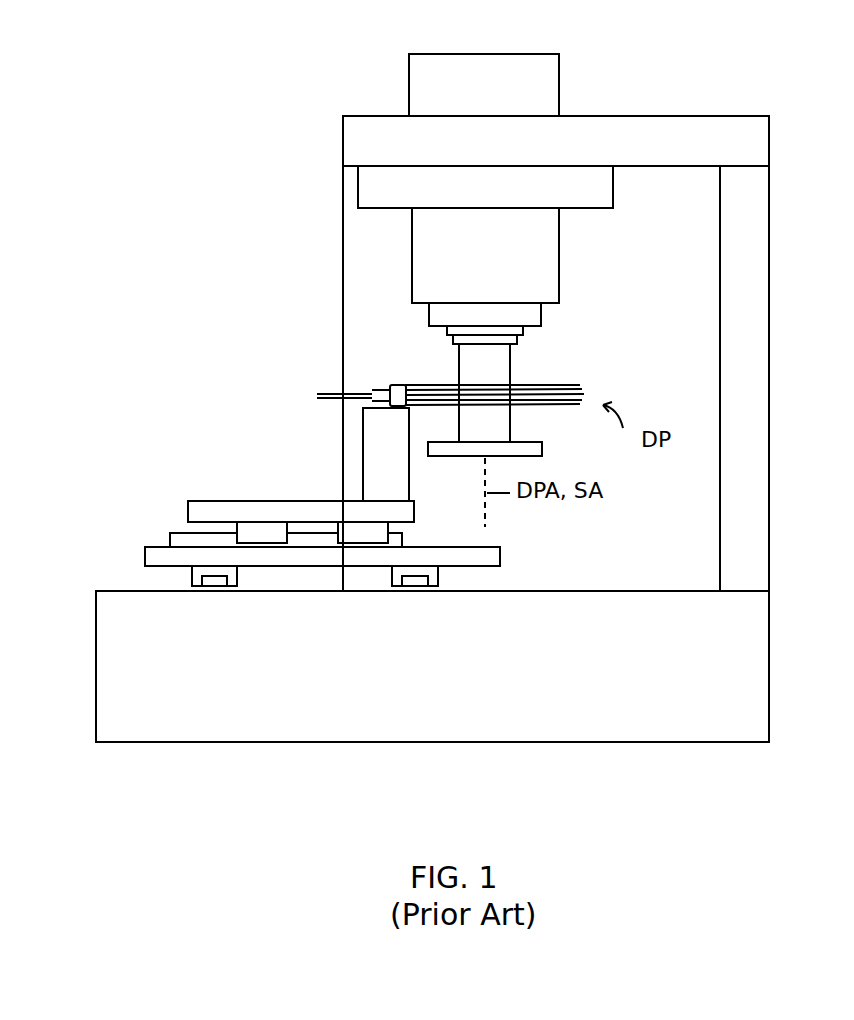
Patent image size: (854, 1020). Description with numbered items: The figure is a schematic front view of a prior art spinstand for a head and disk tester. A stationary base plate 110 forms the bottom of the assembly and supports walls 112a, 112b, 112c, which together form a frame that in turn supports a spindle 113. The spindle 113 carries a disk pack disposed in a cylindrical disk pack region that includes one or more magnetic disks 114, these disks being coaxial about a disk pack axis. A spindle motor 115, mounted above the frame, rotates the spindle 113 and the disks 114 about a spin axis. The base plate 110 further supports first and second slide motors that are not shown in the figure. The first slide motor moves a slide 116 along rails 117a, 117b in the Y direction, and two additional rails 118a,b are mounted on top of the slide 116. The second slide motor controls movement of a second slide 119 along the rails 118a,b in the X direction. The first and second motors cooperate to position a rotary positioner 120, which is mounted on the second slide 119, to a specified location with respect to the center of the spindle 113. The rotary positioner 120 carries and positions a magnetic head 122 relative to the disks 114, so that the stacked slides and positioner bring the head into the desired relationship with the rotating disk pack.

The stationary base plate 110 is at (745, 686).
The wall 112a is at (742, 396).
The wall 112b is at (368, 290).
The wall 112c is at (630, 141).
The spindle 113 is at (513, 260).
The magnetic disk 114 is at (578, 385).
The spindle motor 115 is at (432, 87).
The slide 116 is at (157, 556).
The rail 117a is at (217, 580).
The rail 117b is at (417, 585).
The rails 118a,b is at (193, 540).
The second slide 119 is at (303, 512).
The rotary positioner 120 is at (388, 466).
The magnetic head 122 is at (468, 386).